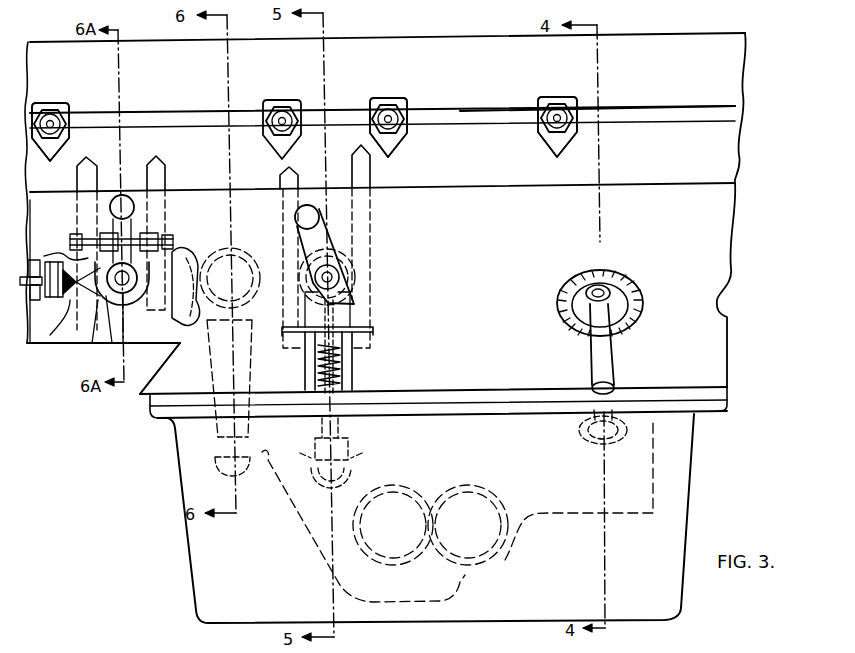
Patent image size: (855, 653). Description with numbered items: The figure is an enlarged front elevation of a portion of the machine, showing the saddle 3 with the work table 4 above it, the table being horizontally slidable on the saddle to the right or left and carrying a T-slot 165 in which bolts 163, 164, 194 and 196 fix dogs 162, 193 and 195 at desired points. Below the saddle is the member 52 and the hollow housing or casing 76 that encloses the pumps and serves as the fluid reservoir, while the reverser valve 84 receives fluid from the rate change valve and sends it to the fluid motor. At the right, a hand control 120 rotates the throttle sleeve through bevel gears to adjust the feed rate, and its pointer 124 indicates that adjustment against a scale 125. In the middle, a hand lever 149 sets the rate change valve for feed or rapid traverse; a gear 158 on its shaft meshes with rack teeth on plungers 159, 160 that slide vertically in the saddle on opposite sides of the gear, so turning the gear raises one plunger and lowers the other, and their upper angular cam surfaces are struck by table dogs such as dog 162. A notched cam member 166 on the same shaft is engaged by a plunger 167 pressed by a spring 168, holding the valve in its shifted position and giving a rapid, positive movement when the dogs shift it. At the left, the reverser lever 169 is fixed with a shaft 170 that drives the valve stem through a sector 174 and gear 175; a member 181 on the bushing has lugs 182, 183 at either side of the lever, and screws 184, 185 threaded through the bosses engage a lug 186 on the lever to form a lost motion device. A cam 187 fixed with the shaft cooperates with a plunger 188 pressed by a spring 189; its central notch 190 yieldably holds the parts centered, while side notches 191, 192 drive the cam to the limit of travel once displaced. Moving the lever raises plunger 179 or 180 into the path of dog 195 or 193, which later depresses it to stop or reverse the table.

The saddle 3 is at (757, 203).
The work table 4 is at (738, 75).
The member 52 is at (727, 398).
The housing or casing 76 is at (680, 483).
The reverser valve 84 is at (206, 376).
The hand control 120 is at (606, 375).
The pointer 124 is at (600, 286).
The scale 125 is at (640, 296).
The hand lever 149 is at (322, 193).
The gear 158 is at (338, 250).
The plunger 159 is at (286, 206).
The plunger 160 is at (367, 208).
The dog 162 is at (546, 145).
The bolt 163 is at (283, 118).
The bolt 164 is at (558, 116).
The T-slot 165 is at (686, 86).
The cam member 166 is at (373, 331).
The plunger 167 is at (340, 345).
The spring 168 is at (340, 365).
The lever 169 is at (120, 195).
The shaft 170 is at (96, 333).
The sector 174 is at (188, 295).
The gear 175 is at (262, 302).
The plunger 179 is at (78, 176).
The plunger 180 is at (163, 173).
The member 181 is at (122, 316).
The lug 182 is at (106, 232).
The lug 183 is at (170, 234).
The screw 184 is at (72, 230).
The screw 185 is at (196, 232).
The lug 186 is at (148, 232).
The cam 187 is at (72, 350).
The plunger 188 is at (24, 272).
The spring 189 is at (40, 303).
The central notch 190 is at (64, 268).
The notch 191 is at (44, 256).
The notch 192 is at (103, 283).
The dog 193 is at (397, 142).
The bolt 194 is at (388, 116).
The dog 195 is at (62, 106).
The bolt 196 is at (50, 110).